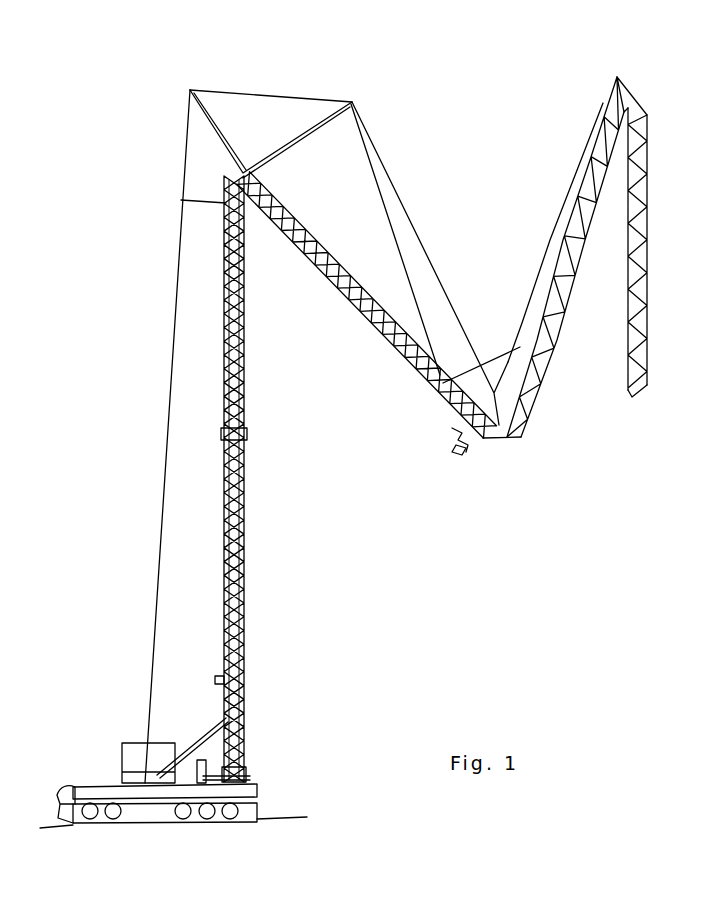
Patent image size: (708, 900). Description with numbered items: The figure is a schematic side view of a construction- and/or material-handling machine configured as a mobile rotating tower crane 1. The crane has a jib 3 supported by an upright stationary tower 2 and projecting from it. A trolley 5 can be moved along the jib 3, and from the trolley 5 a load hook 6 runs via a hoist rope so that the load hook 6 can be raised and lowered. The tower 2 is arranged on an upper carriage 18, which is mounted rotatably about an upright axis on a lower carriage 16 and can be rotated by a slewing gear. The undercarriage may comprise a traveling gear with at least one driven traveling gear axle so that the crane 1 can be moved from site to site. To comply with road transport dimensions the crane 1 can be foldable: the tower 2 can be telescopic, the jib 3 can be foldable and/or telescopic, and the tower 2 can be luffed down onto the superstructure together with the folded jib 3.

The mobile rotating tower crane 1 is at (343, 449).
The tower 2 is at (258, 437).
The jib 3 is at (407, 388).
The trolley 5 is at (453, 430).
The load hook 6 is at (455, 450).
The lower carriage 16 is at (150, 800).
The upper carriage 18 is at (253, 777).